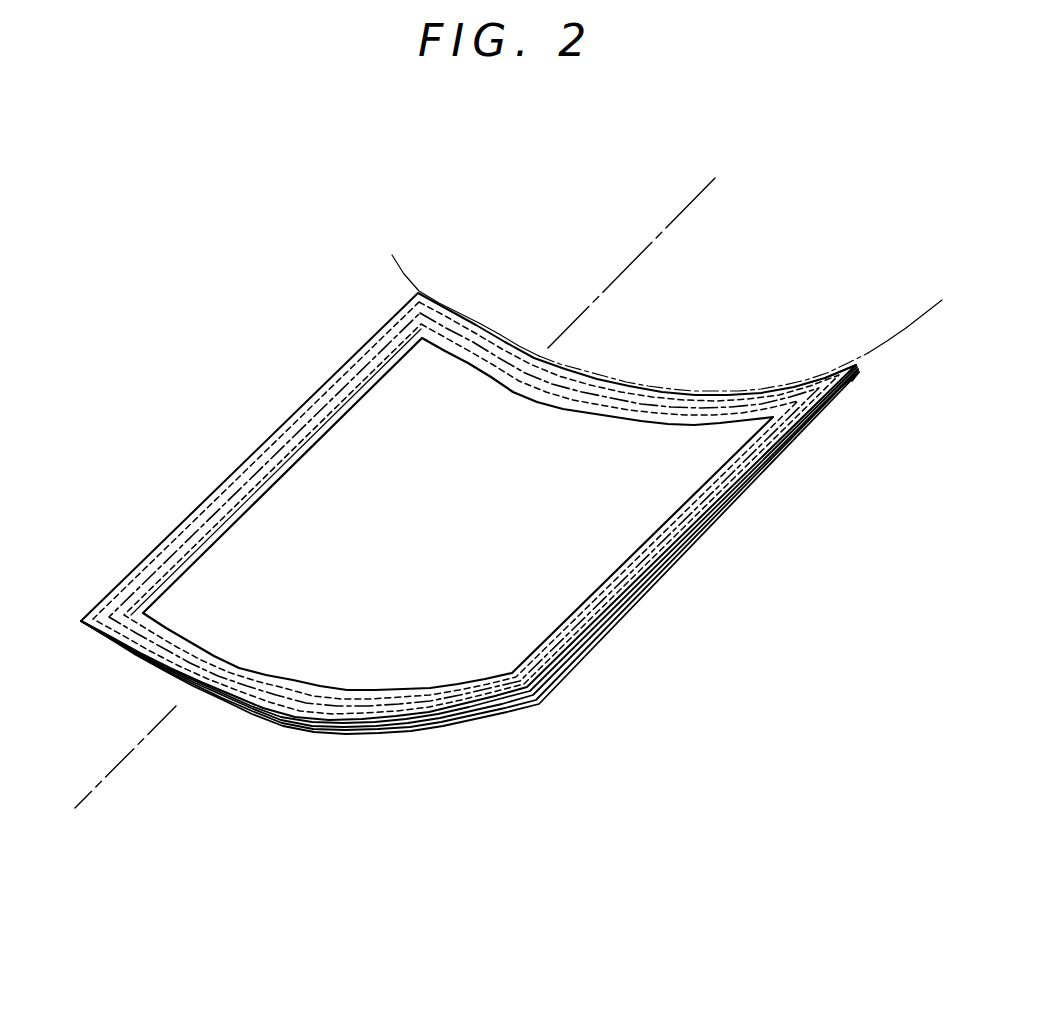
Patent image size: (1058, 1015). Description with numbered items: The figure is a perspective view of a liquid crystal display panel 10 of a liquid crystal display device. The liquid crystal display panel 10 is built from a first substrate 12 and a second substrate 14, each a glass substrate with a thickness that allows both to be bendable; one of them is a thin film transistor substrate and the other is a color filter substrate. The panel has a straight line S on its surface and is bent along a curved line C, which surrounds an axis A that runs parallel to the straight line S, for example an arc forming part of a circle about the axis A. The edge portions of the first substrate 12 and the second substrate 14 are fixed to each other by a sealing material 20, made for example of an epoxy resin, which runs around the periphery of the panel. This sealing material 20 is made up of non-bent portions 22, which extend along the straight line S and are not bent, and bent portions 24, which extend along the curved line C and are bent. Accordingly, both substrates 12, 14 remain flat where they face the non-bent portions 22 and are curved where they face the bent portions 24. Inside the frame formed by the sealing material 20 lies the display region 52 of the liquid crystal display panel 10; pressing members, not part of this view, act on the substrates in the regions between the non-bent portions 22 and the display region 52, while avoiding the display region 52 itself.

The liquid crystal display panel 10 is at (513, 733).
The first substrate 12 is at (859, 375).
The second substrate 14 is at (857, 365).
The sealing material 20 is at (415, 299).
The non-bent portions 22 is at (289, 447).
The bent portions 24 is at (623, 399).
The display region 52 is at (310, 447).
The straight line S is at (250, 497).
The curved line C is at (406, 267).
The axis A is at (673, 218).